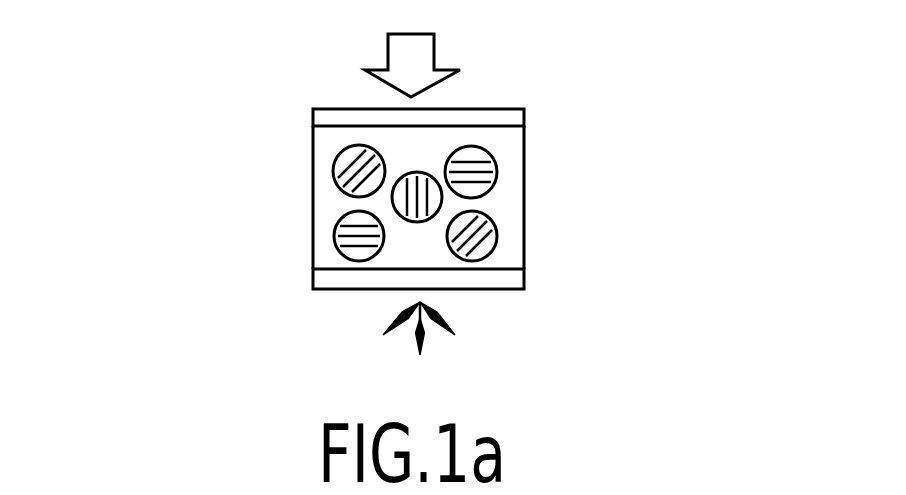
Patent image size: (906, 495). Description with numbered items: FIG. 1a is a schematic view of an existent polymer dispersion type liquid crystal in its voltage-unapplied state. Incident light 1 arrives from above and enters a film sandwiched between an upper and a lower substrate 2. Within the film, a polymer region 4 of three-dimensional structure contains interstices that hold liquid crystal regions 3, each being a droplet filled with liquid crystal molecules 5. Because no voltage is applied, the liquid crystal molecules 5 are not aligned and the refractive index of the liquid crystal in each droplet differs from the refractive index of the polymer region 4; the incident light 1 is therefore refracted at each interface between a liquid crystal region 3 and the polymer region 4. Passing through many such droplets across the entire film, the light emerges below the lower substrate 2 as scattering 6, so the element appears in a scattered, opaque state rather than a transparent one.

The incident light 1 is at (365, 71).
The substrate 2 is at (524, 121).
The liquid crystal region 3 is at (336, 184).
The polymer region 4 is at (338, 250).
The liquid crystal molecules 5 is at (497, 171).
The scattering 6 is at (385, 320).